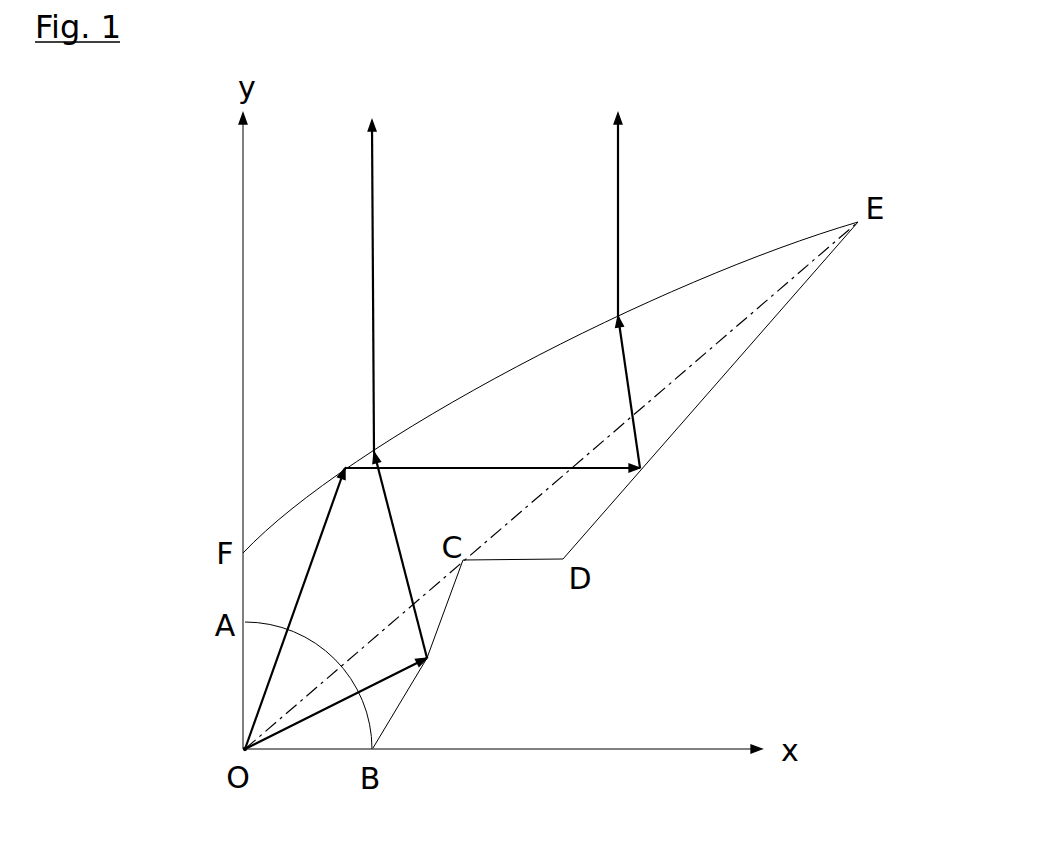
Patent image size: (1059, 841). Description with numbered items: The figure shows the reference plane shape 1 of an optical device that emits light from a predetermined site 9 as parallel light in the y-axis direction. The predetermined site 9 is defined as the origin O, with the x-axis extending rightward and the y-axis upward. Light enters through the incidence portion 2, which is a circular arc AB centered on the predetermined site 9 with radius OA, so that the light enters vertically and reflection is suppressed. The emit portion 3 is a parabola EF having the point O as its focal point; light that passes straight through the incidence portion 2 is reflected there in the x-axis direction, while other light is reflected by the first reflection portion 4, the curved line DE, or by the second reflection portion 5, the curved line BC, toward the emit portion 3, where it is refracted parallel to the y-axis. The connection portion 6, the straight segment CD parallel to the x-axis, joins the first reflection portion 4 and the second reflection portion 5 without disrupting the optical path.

The reference plane shape 1 is at (148, 160).
The incidence portion 2 is at (270, 627).
The emit portion 3 is at (487, 384).
The first reflection portion 4 is at (693, 413).
The second reflection portion 5 is at (440, 627).
The connection portion 6 is at (510, 562).
The predetermined site 9 is at (245, 749).